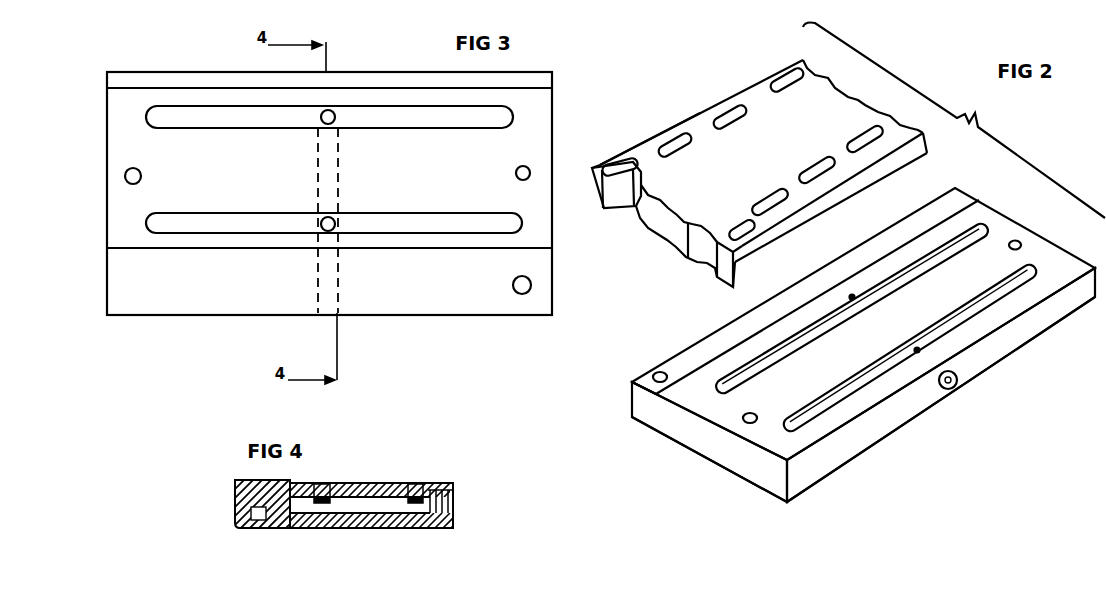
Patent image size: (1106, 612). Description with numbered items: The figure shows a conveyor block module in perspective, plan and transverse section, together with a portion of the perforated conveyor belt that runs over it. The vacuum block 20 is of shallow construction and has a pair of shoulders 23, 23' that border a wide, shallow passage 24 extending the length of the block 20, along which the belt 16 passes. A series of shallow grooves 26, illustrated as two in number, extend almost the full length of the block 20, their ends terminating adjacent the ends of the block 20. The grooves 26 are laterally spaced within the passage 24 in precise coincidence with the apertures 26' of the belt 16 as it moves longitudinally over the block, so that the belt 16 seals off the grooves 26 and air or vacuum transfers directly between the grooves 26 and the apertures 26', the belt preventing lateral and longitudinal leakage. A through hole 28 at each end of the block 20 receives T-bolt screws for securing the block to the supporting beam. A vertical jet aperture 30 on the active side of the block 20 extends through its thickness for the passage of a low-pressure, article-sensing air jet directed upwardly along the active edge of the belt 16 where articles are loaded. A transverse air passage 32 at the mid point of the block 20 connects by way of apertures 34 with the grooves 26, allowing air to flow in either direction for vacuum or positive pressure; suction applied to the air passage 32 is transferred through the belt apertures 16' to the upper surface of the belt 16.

In FIG. 2, the belt 16 is at (759, 183).
In FIG. 2, the belt apertures 16' is at (652, 127).
In FIG. 2, the vacuum block 20 is at (600, 415).
In FIG. 4, the shoulder 23 is at (350, 481).
In FIG. 2, the shoulder 23 is at (863, 428).
In FIG. 4, the shoulder 23' is at (260, 494).
In FIG. 2, the shoulder 23' is at (805, 297).
In FIG. 2, the passage 24 is at (731, 432).
In FIG. 3, the grooves 26 is at (334, 234).
In FIG. 2, the grooves 26 is at (876, 357).
In FIG. 2, the apertures 26' is at (743, 143).
In FIG. 3, the through hole 28 is at (125, 176).
In FIG. 2, the through hole 28 is at (1021, 242).
In FIG. 3, the jet aperture 30 is at (522, 294).
In FIG. 2, the jet aperture 30 is at (653, 374).
In FIG. 3, the transverse air passage 32 is at (338, 308).
In FIG. 2, the transverse air passage 32 is at (958, 388).
In FIG. 4, the apertures 34 is at (322, 484).
In FIG. 2, the apertures 34 is at (917, 350).